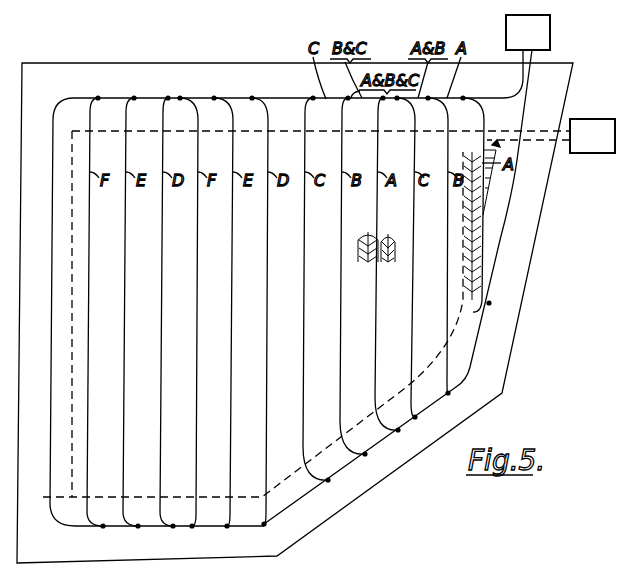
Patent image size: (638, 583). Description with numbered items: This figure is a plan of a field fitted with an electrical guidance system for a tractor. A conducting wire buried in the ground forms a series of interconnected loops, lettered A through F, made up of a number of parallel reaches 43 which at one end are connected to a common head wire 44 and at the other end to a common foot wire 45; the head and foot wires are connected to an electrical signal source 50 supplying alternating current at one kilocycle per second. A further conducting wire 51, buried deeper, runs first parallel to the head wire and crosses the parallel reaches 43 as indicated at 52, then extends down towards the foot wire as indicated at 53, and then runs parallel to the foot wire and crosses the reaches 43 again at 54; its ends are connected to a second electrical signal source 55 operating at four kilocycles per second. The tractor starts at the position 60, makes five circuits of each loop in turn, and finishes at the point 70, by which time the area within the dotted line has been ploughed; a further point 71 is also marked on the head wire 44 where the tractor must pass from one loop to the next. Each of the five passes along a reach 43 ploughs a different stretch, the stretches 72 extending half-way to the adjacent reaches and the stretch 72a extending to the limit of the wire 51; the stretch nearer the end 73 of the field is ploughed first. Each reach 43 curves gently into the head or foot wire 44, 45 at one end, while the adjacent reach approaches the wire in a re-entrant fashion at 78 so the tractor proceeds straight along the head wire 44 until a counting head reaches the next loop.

The parallel reaches 43 is at (52, 303).
The head wire 44 is at (117, 98).
The foot wire 45 is at (116, 527).
The electrical signal source 50 is at (528, 32).
The further conducting wire 51 is at (322, 452).
The crossing of wire 51 with reaches near head wire 52 is at (241, 131).
The downward extension of wire 51 53 is at (72, 174).
The crossing of wire 51 with reaches near foot wire 54 is at (398, 297).
The second electrical signal source 55 is at (551, 136).
The starting position 60 is at (474, 98).
The finishing point 70 is at (74, 98).
The tube connection 71 is at (417, 113).
The ploughed stretch 72 is at (366, 240).
The ploughed stretch extending to wire 51 72a is at (490, 143).
The end of the field 73 is at (537, 237).
The re-entrant part 78 is at (315, 107).